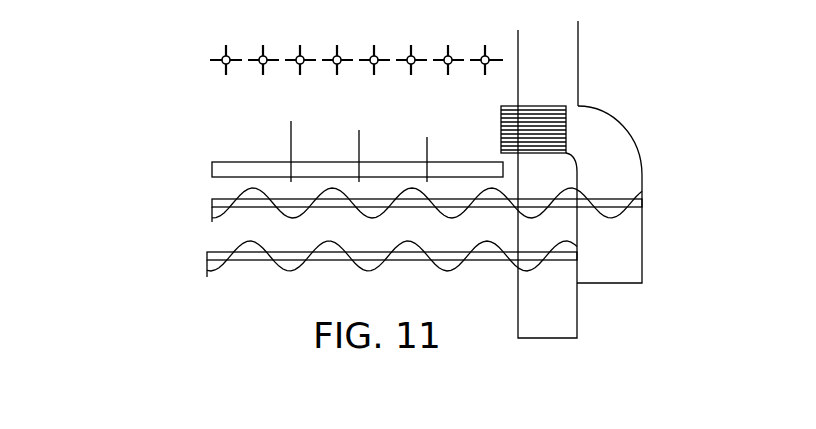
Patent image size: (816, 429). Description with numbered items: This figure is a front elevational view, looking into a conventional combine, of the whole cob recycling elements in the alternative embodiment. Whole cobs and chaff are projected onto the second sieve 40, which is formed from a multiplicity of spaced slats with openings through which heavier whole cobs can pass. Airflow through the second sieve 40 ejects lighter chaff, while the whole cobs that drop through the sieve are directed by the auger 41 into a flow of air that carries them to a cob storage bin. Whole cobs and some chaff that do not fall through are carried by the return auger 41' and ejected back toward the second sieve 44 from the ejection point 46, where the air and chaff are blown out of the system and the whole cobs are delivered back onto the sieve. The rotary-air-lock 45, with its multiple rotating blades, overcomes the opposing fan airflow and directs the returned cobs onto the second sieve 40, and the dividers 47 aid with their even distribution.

The second sieve 40 is at (220, 170).
The auger 41 is at (315, 269).
The return auger 41' is at (345, 215).
The second sieve 44 is at (642, 144).
The rotary-air-lock 45 is at (218, 52).
The ejection point 46 is at (567, 120).
The dividers 47 is at (291, 155).